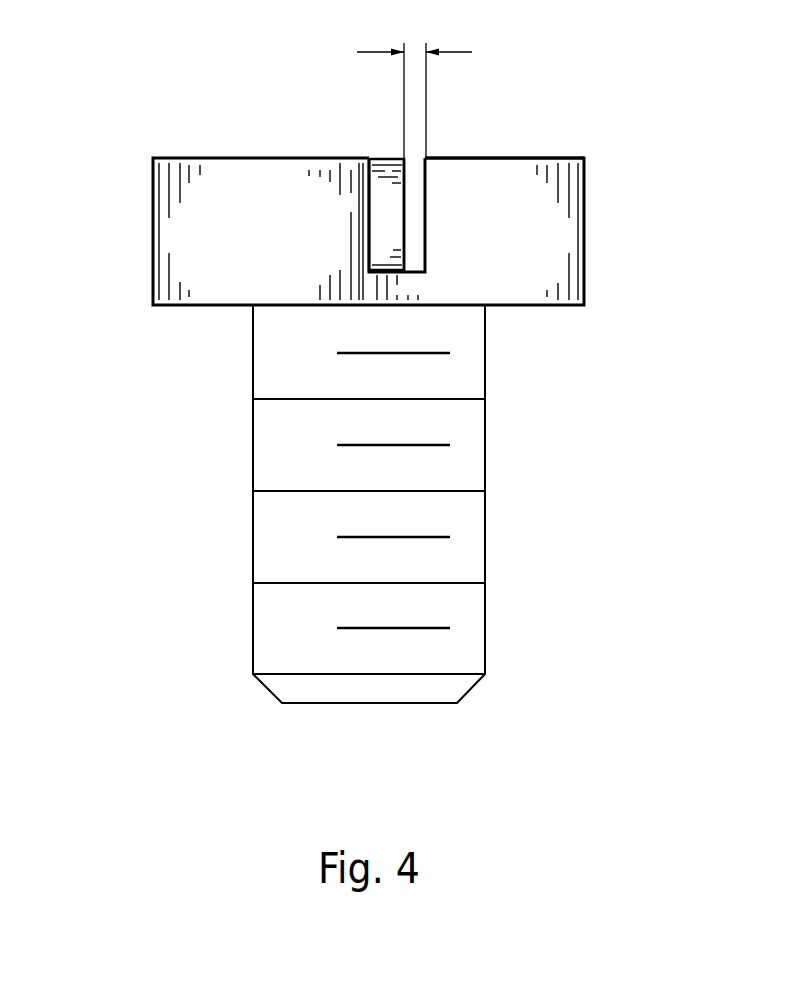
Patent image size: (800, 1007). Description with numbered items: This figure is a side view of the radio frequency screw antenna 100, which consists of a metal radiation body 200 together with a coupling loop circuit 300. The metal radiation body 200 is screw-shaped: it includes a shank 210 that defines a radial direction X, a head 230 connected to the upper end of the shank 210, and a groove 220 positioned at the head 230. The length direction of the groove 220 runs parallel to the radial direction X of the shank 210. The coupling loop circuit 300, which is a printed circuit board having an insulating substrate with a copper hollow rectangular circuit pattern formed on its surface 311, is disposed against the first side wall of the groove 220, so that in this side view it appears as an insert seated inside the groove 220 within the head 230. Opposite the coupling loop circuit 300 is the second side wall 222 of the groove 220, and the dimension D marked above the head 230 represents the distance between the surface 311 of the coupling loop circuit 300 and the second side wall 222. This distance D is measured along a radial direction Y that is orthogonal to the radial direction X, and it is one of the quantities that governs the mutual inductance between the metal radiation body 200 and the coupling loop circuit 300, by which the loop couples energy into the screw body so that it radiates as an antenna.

The radio frequency screw antenna 100 is at (97, 109).
The metal radiation body 200 is at (720, 170).
The shank 210 is at (472, 372).
The groove 220 is at (442, 259).
The second side wall 222 is at (426, 212).
The head 230 is at (563, 187).
The coupling loop circuit 300 is at (380, 158).
The surface 311 is at (404, 210).
The distance D is at (414, 85).